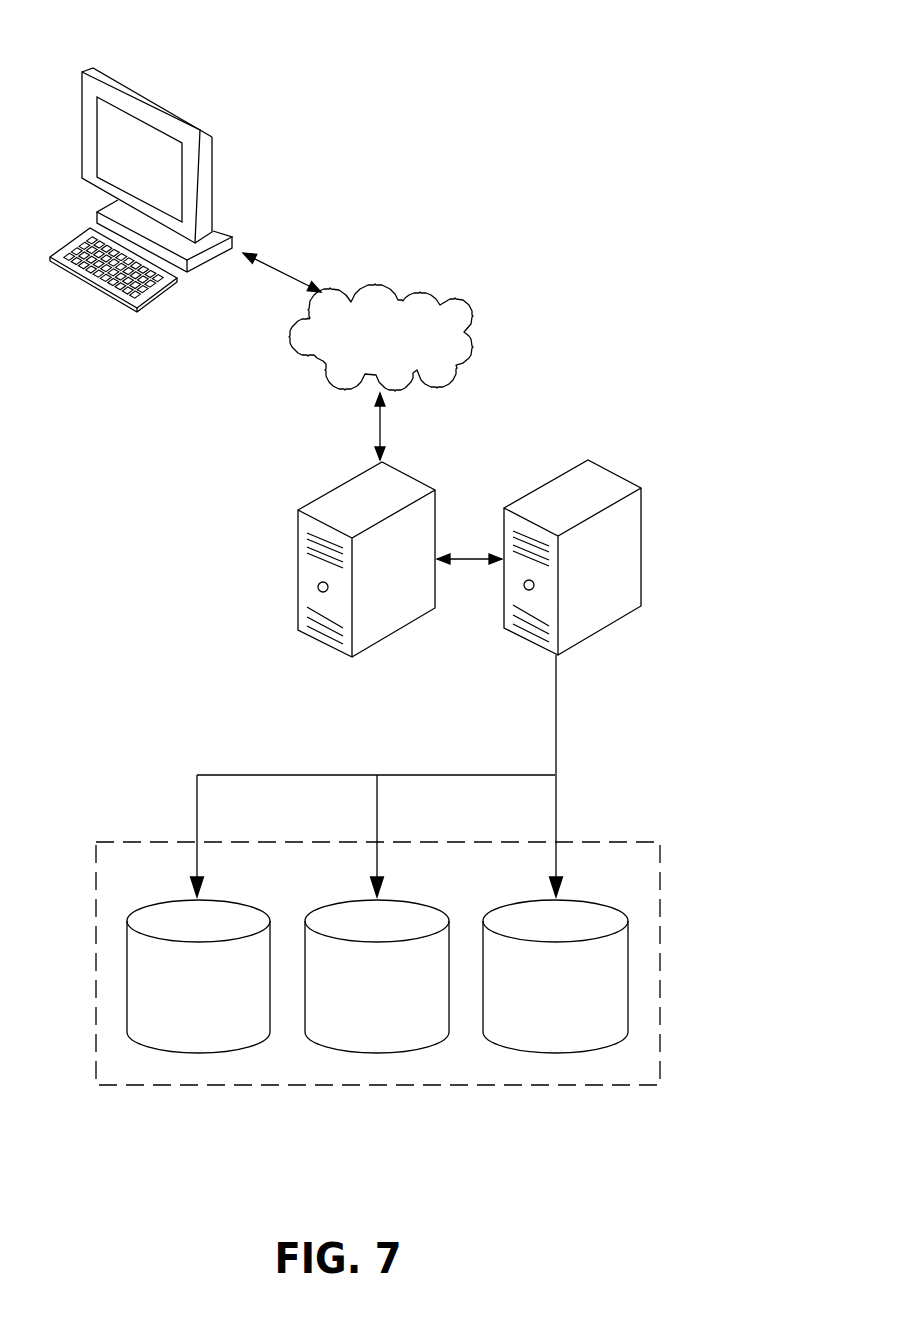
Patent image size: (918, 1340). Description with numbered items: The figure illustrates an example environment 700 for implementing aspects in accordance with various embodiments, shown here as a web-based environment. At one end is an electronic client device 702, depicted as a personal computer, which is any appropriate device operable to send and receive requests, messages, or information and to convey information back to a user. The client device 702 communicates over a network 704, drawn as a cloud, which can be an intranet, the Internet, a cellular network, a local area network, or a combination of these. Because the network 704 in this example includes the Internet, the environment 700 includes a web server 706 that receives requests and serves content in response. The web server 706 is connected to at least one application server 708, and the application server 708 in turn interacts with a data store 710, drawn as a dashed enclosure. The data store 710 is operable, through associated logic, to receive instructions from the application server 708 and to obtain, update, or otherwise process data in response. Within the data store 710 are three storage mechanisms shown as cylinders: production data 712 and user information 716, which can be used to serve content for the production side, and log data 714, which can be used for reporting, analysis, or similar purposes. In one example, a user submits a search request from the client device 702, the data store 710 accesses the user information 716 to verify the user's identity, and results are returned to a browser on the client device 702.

The environment 700 is at (752, 104).
The electronic client device 702 is at (158, 103).
The network 704 is at (410, 292).
The web server 706 is at (299, 557).
The application server 708 is at (530, 645).
The data store 710 is at (130, 1086).
The production data 712 is at (195, 1053).
The log data 714 is at (377, 1053).
The user information 716 is at (553, 1053).